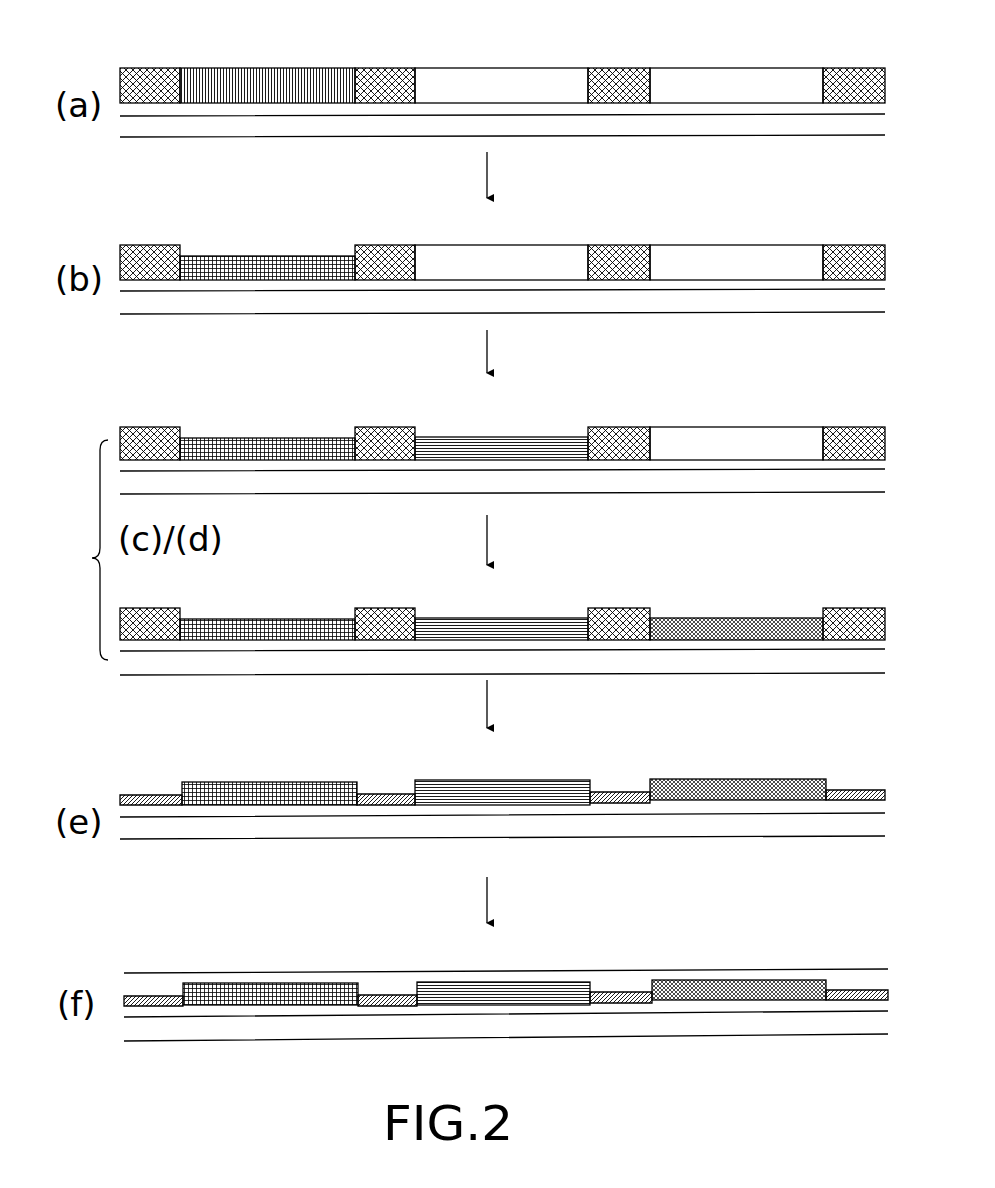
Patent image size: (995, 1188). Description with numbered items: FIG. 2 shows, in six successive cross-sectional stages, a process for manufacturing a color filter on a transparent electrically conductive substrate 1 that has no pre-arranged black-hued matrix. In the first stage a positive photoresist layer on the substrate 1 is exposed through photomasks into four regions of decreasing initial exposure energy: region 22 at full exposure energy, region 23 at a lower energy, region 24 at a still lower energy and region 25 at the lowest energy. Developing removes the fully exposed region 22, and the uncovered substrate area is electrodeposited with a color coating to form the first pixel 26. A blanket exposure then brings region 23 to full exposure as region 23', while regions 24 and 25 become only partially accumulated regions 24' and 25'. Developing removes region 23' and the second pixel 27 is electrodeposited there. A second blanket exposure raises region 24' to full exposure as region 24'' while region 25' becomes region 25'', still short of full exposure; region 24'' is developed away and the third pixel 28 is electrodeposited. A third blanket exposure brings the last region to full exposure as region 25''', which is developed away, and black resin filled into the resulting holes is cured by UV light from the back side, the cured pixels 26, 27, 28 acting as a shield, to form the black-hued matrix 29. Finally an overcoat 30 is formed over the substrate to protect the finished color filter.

The substrate 1 is at (200, 128).
The photoresist region with exposure energy D1 22 is at (287, 100).
The photoresist region with exposure energy D2 23 is at (501, 54).
The photoresist region with exposure energy D3 24 is at (736, 60).
The photoresist region with exposure energy D4 25 is at (369, 54).
The first pixel 26 is at (706, 110).
The second pixel 27 is at (522, 440).
The third pixel 28 is at (750, 618).
The black-hued matrix 29 is at (373, 795).
The overcoat 30 is at (622, 972).
The fully exposed region D2+IE1 23' is at (501, 239).
The partially exposed region D3+IE1 24' is at (736, 239).
The fully exposed region D3+IE1+IE2 24'' is at (736, 418).
The partially exposed region D4+IE1 25' is at (379, 235).
The partially exposed region D4+IE1+IE2 25'' is at (372, 419).
The fully exposed region D4+IE1+IE2+IE3 25''' is at (376, 599).